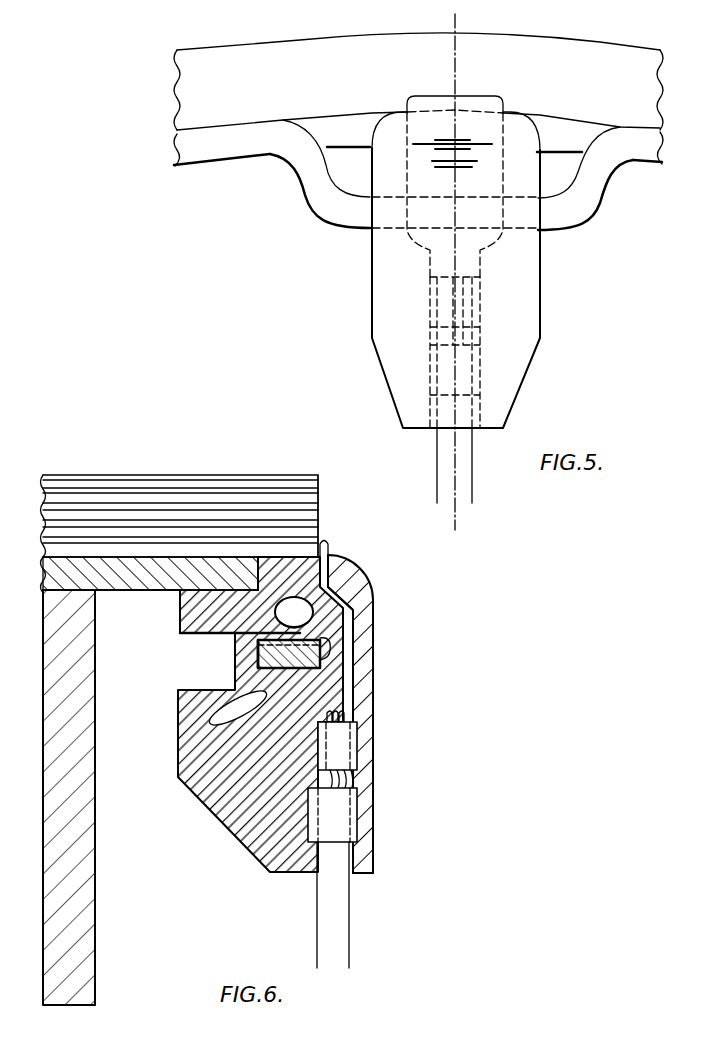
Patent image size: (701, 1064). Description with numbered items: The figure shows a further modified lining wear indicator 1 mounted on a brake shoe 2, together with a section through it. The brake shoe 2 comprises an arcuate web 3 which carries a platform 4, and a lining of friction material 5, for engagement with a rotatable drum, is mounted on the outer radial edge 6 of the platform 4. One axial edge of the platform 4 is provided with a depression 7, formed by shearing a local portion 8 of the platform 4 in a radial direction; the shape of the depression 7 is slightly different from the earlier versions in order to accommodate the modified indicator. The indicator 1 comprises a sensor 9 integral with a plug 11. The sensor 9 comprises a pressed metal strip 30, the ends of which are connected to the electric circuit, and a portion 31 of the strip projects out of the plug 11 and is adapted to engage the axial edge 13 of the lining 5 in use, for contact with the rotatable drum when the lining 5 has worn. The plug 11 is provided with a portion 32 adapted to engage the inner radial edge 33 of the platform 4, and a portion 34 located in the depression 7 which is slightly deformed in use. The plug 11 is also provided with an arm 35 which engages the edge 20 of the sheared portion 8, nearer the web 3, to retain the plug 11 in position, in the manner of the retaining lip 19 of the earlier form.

In FIG. 6, the lining wear indicator 1 is at (365, 782).
In FIG. 6, the brake shoe 2 is at (92, 760).
In FIG. 6, the arcuate web 3 is at (86, 826).
In FIG. 5, the platform 4 is at (240, 148).
In FIG. 6, the platform 4 is at (121, 582).
In FIG. 5, the lining of friction material 5 is at (267, 58).
In FIG. 6, the lining of friction material 5 is at (222, 482).
In FIG. 5, the outer radial edge 6 is at (455, 14).
In FIG. 6, the outer radial edge 6 is at (113, 557).
In FIG. 5, the depression 7 is at (357, 177).
In FIG. 5, the sheared portion 8 is at (318, 178).
In FIG. 6, the sheared portion 8 is at (325, 643).
In FIG. 5, the sensor 9 is at (474, 92).
In FIG. 5, the plug 11 is at (527, 316).
In FIG. 6, the plug 11 is at (377, 577).
In FIG. 6, the axial edge of the lining 13 is at (333, 477).
In FIG. 6, the retaining lip 19 is at (253, 667).
In FIG. 6, the edge of the sheared portion 20 is at (252, 668).
In FIG. 5, the pressed metal strip 30 is at (503, 111).
In FIG. 6, the pressed metal strip 30 is at (354, 693).
In FIG. 6, the projecting portion of the strip 31 is at (323, 554).
In FIG. 6, the platform-engaging portion of the plug 32 is at (182, 618).
In FIG. 6, the inner radial edge of the platform 33 is at (172, 593).
In FIG. 6, the depression-located portion of the plug 34 is at (262, 646).
In FIG. 6, the arm 35 is at (215, 688).